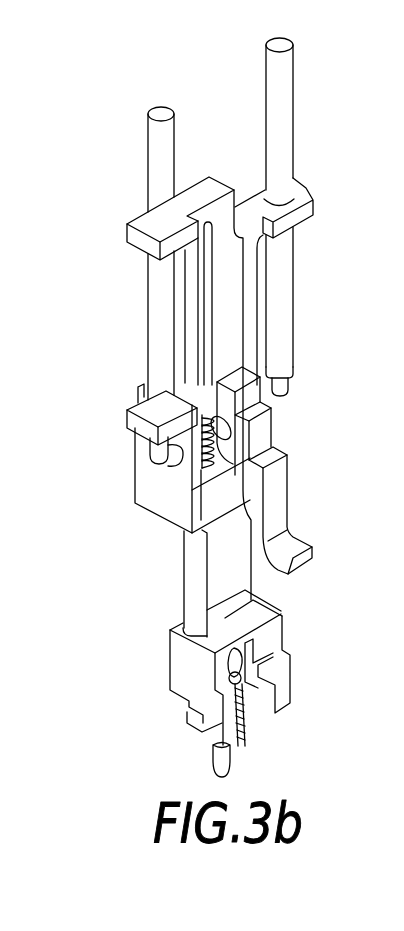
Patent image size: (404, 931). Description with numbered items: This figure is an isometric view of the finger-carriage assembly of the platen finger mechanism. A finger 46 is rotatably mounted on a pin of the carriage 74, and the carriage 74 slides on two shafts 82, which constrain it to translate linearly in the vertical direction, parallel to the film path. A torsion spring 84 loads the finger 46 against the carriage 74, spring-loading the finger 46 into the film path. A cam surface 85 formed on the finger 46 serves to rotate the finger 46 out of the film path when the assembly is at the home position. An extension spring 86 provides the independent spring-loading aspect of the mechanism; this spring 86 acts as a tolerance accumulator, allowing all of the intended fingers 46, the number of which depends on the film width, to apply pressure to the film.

The shafts 82 is at (277, 74).
The torsion spring 84 is at (207, 465).
The cam surface 85 is at (277, 445).
The finger 46 is at (288, 498).
The carriage 74 is at (295, 678).
The extension spring 86 is at (242, 743).